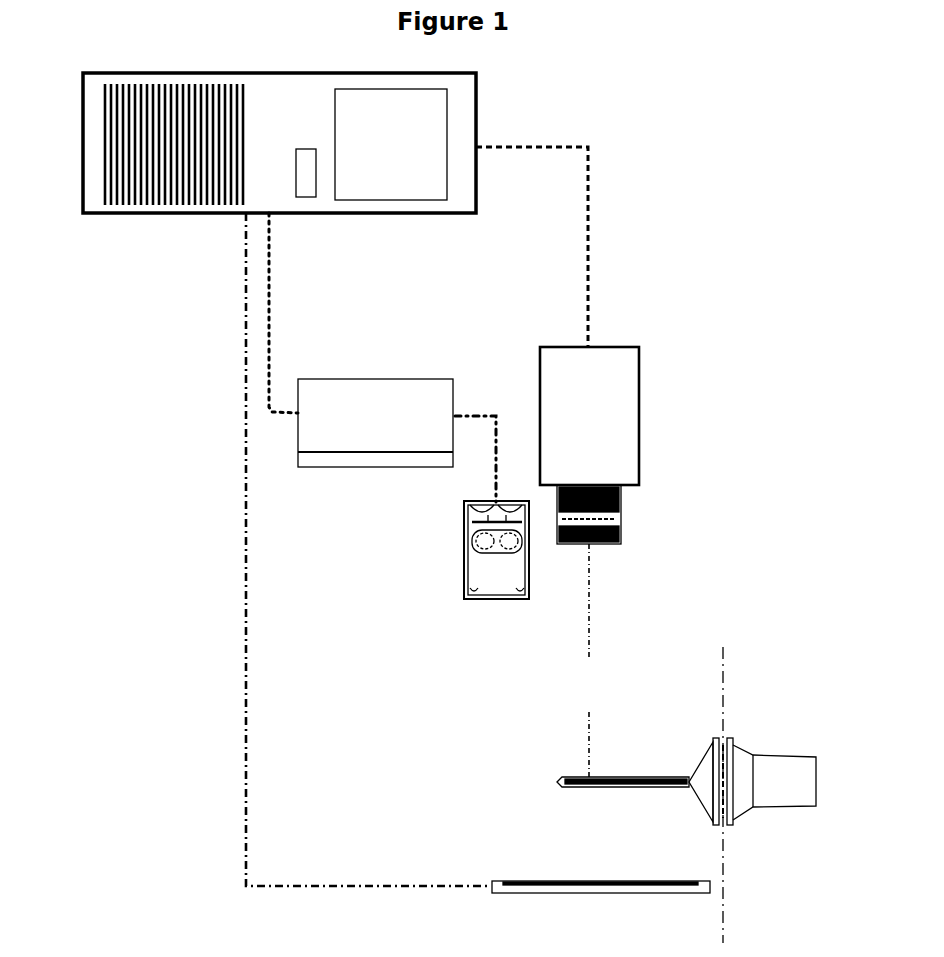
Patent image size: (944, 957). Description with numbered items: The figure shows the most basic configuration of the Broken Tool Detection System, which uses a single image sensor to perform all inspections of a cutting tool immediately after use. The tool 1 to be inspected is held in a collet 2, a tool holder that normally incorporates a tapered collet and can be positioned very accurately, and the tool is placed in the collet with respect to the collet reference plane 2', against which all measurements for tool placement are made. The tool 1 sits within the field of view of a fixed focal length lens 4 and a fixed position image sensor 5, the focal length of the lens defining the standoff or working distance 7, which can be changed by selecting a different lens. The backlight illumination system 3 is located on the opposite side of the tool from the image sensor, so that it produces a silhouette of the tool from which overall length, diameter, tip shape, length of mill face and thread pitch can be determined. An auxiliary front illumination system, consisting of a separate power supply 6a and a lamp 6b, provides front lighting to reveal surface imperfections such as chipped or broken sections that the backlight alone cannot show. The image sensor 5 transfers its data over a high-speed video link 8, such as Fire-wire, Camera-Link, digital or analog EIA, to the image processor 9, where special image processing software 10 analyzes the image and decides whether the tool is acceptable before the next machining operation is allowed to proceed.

The tool 1 is at (557, 780).
The collet 2 is at (792, 740).
The collet reference plane 2' is at (723, 768).
The illumination system 3 is at (710, 886).
The lens 4 is at (613, 498).
The image sensor 5 is at (623, 414).
The power supply 6a is at (389, 357).
The lamp 6b is at (464, 535).
The working distance 7 is at (590, 660).
The high-speed video link 8 is at (663, 247).
The image processor 9 is at (245, 226).
The image processing software 10 is at (177, 292).